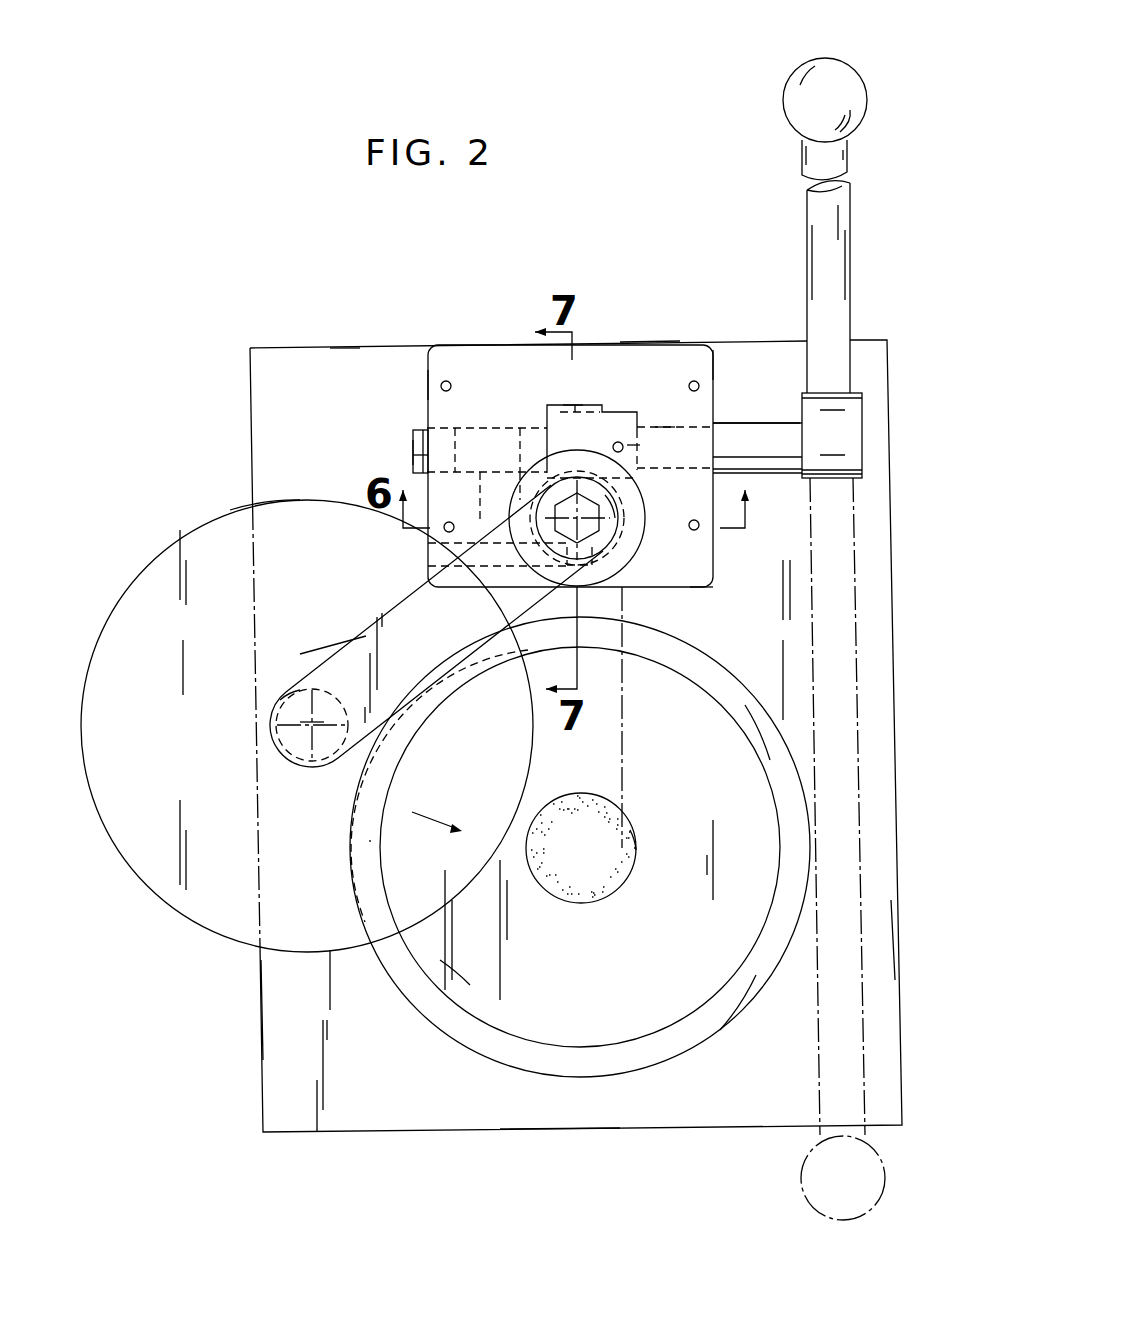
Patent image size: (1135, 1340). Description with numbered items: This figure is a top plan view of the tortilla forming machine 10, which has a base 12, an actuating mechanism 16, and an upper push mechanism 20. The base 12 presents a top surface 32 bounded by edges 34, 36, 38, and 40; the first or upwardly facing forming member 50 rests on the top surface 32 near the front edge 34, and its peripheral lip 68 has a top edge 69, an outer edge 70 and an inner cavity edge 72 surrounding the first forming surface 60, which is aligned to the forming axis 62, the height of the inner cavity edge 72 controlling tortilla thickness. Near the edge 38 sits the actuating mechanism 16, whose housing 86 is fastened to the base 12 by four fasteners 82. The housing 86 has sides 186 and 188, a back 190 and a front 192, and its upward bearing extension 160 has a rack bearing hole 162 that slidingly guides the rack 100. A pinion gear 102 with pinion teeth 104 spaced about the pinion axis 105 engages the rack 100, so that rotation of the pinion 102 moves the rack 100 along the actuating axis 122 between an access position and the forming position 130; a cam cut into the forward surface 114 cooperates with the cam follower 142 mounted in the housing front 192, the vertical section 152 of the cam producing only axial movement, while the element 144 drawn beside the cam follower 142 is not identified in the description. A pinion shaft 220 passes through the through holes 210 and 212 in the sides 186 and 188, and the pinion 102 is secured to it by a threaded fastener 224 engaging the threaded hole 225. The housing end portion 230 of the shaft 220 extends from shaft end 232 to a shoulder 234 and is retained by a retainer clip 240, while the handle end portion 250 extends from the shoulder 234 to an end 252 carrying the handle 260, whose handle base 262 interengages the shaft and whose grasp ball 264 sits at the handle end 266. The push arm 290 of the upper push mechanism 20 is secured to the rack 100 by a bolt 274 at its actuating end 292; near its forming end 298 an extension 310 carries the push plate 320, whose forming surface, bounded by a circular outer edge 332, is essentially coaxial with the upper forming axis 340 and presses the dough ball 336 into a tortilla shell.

The tortilla forming machine 10 is at (255, 312).
The base 12 is at (253, 374).
The actuating mechanism 16 is at (670, 330).
The upper push mechanism 20 is at (368, 612).
The top surface 32 is at (283, 1030).
The front edge 34 is at (556, 1132).
The edge 36 is at (895, 940).
The edge 38 is at (342, 345).
The edge 40 is at (262, 984).
The first forming member 50 is at (583, 846).
The first forming surface 60 is at (438, 963).
The forming axis 62 is at (585, 848).
The peripheral lip 68 is at (745, 705).
The top edge 69 is at (756, 975).
The outer edge 70 is at (680, 1052).
The inner cavity edge 72 is at (592, 1045).
The fasteners 82 is at (700, 356).
The housing 86 is at (645, 342).
The rack 100 is at (640, 512).
The pinion gear 102 is at (588, 405).
The pinion teeth 104 is at (565, 405).
The pinion axis 105 is at (413, 450).
The forward surface 114 is at (560, 566).
The actuating axis 122 is at (585, 518).
The forming position 130 is at (628, 700).
The cam follower 142 is at (640, 717).
The section line 144 is at (580, 620).
The vertical section 152 is at (562, 547).
The upward bearing extension 160 is at (520, 477).
The rack bearing hole 162 is at (618, 508).
The side 186 is at (428, 380).
The side 188 is at (717, 362).
The back 190 is at (470, 345).
The front 192 is at (706, 585).
The through hole 210 is at (455, 428).
The through hole 212 is at (663, 427).
The pinion shaft 220 is at (725, 421).
The threaded fastener 224 is at (618, 440).
The threaded hole 225 is at (627, 445).
The housing end portion 230 is at (532, 437).
The shaft end 232 is at (413, 455).
The shoulder 234 is at (715, 457).
The retainer clip 240 is at (423, 432).
The handle end portion 250 is at (732, 440).
The end 252 is at (780, 440).
The handle 260 is at (803, 200).
The handle base 262 is at (822, 451).
The grasp ball 264 is at (783, 96).
The handle end 266 is at (817, 60).
The bolt 274 is at (745, 523).
The push arm 290 is at (366, 636).
The actuating end 292 is at (587, 405).
The forming end 298 is at (286, 690).
The extension 310 is at (300, 722).
The push plate 320 is at (172, 573).
The circular outer edge 332 is at (215, 521).
The dough ball 336 is at (636, 842).
The upper forming axis 340 is at (290, 706).